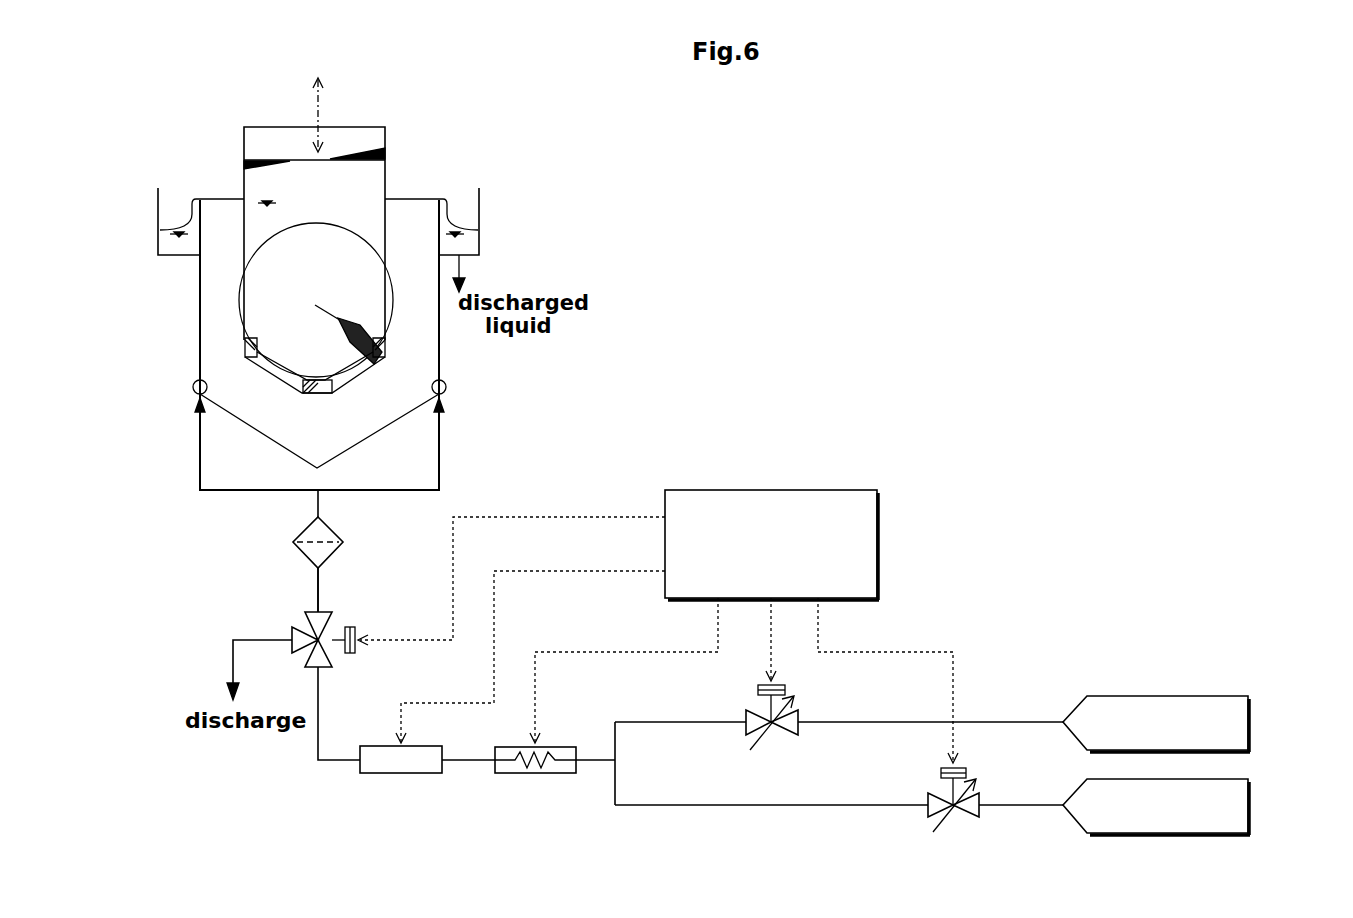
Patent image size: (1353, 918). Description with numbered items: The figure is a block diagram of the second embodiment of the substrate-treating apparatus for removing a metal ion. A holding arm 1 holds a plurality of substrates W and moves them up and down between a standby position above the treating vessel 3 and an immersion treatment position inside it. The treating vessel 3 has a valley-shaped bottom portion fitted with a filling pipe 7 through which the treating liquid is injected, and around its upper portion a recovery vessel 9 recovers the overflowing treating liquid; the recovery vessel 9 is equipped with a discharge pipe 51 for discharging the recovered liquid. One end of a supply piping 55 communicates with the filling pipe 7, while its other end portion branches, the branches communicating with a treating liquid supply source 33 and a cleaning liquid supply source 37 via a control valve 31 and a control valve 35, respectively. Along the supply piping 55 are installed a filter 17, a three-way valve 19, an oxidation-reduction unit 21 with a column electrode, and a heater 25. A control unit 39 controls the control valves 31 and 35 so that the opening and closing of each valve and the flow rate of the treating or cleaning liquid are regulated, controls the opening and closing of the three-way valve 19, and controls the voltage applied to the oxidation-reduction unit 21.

The holding arm 1 is at (375, 136).
The treating vessel 3 is at (432, 192).
The recovery vessel 9 is at (480, 213).
The substrate W is at (375, 258).
The discharge pipe 51 is at (466, 268).
The filling pipe 7 is at (194, 382).
The filter 17 is at (343, 540).
The supply piping 55 is at (318, 586).
The three-way valve 19 is at (355, 655).
The oxidation-reduction unit 21 is at (404, 775).
The heater 25 is at (533, 775).
The control unit 39 is at (776, 489).
The control valve 35 is at (745, 726).
The control valve 31 is at (967, 770).
The cleaning liquid supply source 37 is at (1248, 706).
The treating liquid supply source 33 is at (1248, 784).